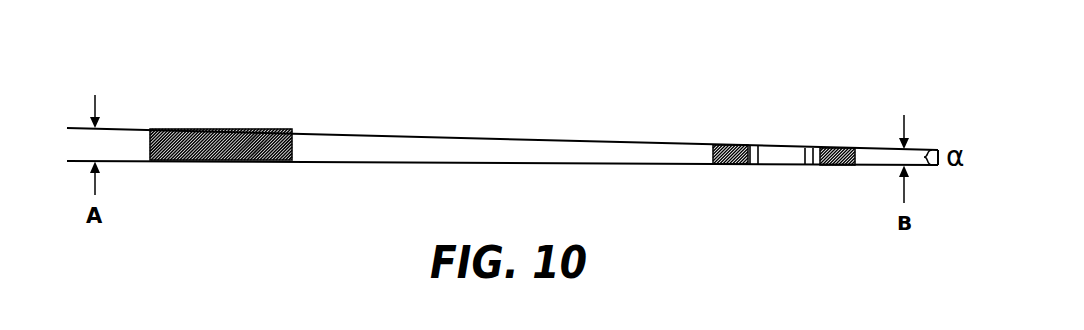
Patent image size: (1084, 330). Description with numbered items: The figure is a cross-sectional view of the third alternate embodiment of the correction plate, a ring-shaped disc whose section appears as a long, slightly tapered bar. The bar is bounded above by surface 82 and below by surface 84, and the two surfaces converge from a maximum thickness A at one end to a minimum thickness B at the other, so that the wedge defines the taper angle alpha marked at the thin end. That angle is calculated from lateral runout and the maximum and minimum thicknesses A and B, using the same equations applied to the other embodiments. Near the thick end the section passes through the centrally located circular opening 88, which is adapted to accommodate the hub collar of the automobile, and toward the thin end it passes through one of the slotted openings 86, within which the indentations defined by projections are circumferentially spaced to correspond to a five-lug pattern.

The upper surface of tapered body 82 is at (552, 168).
The lower surface of tapered body 84 is at (633, 140).
The slotted openings 86 is at (756, 156).
The opening 88 is at (294, 143).